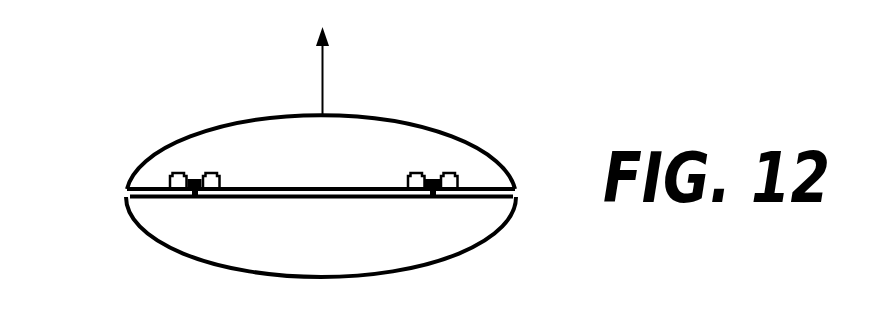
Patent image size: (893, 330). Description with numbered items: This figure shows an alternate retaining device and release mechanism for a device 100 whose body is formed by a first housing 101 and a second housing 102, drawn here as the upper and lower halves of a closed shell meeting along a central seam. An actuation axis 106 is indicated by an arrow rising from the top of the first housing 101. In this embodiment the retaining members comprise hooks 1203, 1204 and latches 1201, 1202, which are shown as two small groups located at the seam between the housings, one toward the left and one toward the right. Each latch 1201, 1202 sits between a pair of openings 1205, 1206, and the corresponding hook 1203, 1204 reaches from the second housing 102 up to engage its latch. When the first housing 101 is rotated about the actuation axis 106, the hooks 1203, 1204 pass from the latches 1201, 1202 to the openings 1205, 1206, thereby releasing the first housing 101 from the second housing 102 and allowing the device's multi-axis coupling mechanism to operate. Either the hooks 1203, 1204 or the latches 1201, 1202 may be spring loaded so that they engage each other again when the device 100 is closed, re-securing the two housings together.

The device 100 is at (121, 181).
The first housing 101 is at (397, 127).
The second housing 102 is at (453, 220).
The actuation axis 106 is at (325, 85).
The latch 1201 is at (198, 179).
The latch 1202 is at (426, 180).
The hook 1203 is at (194, 187).
The hook 1204 is at (433, 190).
The opening 1205 is at (182, 172).
The opening 1206 is at (449, 173).